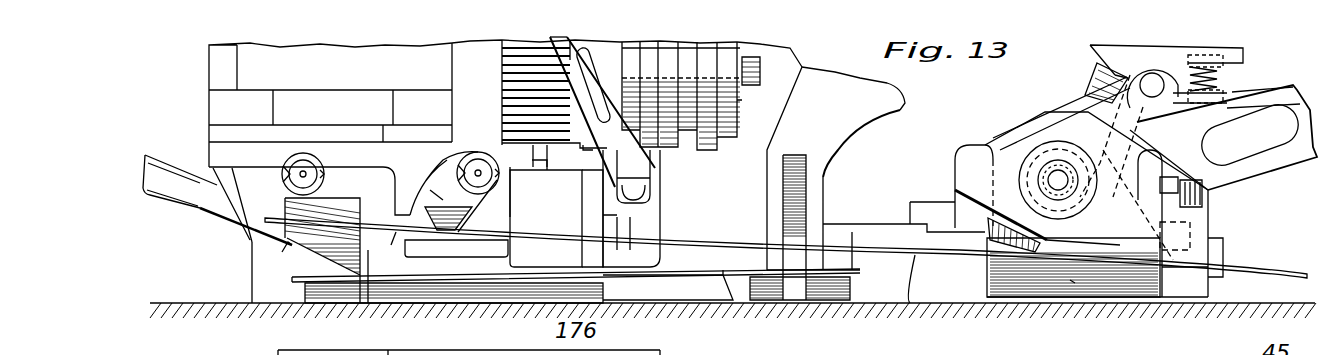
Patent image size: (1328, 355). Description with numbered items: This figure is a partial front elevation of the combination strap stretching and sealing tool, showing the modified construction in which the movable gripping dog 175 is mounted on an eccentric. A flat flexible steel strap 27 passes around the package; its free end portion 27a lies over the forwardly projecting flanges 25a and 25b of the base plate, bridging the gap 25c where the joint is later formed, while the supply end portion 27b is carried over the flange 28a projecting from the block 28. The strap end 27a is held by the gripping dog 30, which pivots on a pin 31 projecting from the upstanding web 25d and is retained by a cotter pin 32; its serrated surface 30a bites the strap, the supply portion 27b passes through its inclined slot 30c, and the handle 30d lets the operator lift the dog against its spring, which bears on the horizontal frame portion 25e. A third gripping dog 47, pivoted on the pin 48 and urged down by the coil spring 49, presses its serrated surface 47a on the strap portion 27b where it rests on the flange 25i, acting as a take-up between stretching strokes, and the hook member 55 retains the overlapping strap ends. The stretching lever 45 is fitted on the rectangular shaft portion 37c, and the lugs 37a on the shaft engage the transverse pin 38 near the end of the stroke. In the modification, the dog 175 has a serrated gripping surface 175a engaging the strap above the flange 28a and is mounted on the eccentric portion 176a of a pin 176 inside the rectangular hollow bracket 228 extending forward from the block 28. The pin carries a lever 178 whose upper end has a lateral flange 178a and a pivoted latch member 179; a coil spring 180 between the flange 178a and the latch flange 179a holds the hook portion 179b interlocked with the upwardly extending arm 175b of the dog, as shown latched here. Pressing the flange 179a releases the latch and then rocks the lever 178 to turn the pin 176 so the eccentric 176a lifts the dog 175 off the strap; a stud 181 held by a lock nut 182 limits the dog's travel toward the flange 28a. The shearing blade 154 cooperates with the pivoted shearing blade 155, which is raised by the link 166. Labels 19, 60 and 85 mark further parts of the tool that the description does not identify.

The shaft 19 is at (478, 170).
The base flange 25a is at (375, 292).
The base flange 25b is at (830, 290).
The gap 25c is at (650, 290).
The web portion 25d is at (520, 168).
The horizontal frame portion 25e is at (386, 142).
The flange 25i is at (480, 232).
The strap 27 is at (1304, 276).
The free end portion of strap 27a is at (292, 279).
The supply end portion of strap 27b is at (384, 247).
The block 28 is at (1212, 246).
The flange 28a is at (1070, 280).
The gripping dog 30 is at (282, 252).
The serrated surface 30a is at (360, 282).
The inclined slot 30c is at (285, 218).
The handle 30d is at (165, 178).
The pin 31 is at (303, 174).
The cotter pin 32 is at (284, 164).
The lugs 37a is at (1070, 266).
The rectangular shaft portion 37c is at (1159, 242).
The transverse pin 38 is at (955, 190).
The stretching lever 45 is at (1282, 165).
The gripping dog 47 is at (440, 176).
The serrated surface 47a is at (456, 235).
The pin 48 is at (482, 160).
The coil spring 49 is at (430, 190).
The hook member 55 is at (800, 190).
The lever 60 is at (540, 55).
The stop 85 is at (746, 122).
The shearing blade 154 is at (590, 255).
The movable shearing blade 155 is at (633, 222).
The link 166 is at (650, 162).
The gripping dog 175 is at (1045, 252).
The serrated gripping surface 175a is at (995, 245).
The arm 175b is at (1100, 80).
The pin 176 is at (1040, 180).
The eccentric portion 176a is at (1045, 170).
The lever 178 is at (1112, 100).
The flange 178a is at (1245, 90).
The latch member 179 is at (1140, 58).
The flange 179a is at (1242, 38).
The hook portion 179b is at (1100, 48).
The coil spring 180 is at (1240, 88).
The stud 181 is at (1203, 205).
The lock nut 182 is at (1180, 185).
The rectangular hollow bracket 228 is at (965, 160).